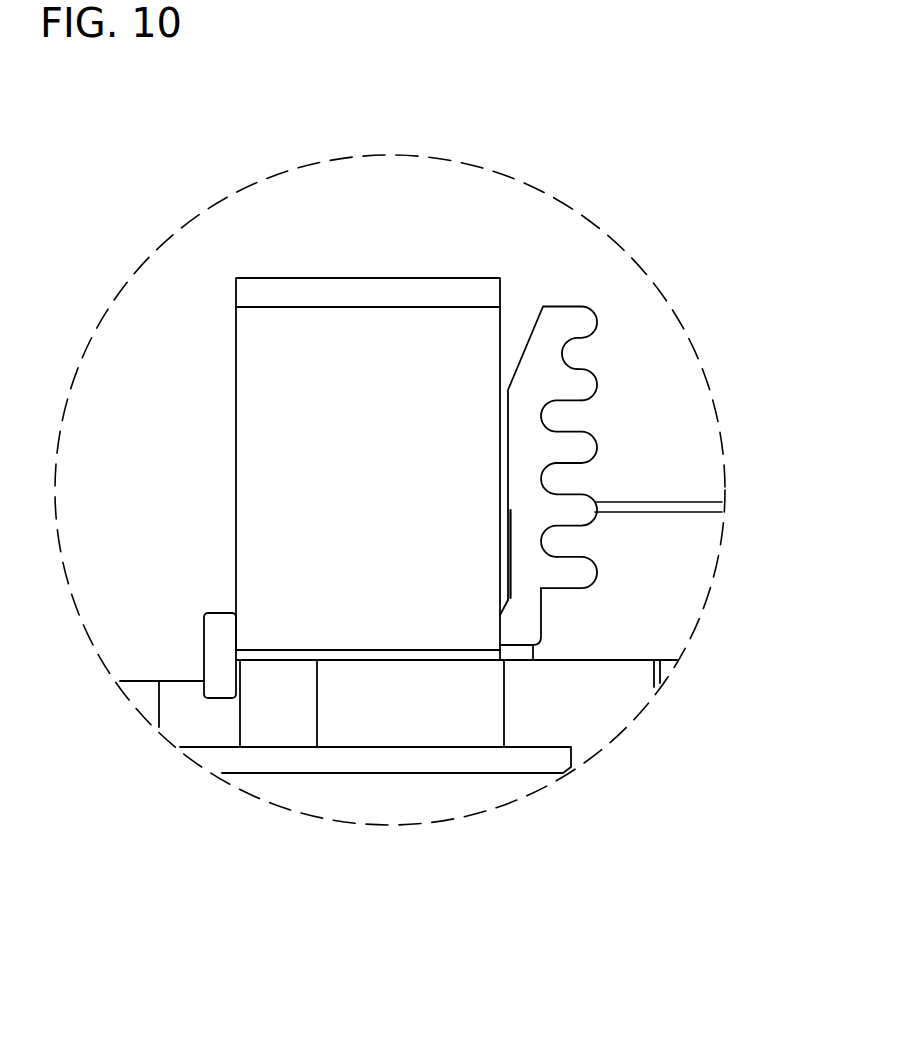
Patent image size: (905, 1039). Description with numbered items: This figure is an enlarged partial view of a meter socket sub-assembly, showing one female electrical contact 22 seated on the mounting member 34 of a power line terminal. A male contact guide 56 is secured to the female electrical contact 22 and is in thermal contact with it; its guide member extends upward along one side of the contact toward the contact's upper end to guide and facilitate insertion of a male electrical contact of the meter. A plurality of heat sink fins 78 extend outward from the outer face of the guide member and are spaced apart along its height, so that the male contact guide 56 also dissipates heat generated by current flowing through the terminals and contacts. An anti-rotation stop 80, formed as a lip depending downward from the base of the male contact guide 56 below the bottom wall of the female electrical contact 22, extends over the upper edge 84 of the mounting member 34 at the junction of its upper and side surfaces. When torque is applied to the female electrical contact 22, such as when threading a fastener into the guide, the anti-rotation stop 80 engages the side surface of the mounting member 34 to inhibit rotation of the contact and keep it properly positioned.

The female electrical contact 22 is at (385, 278).
The mounting member 34 is at (353, 702).
The male contact guide 56 is at (610, 433).
The heat sink fins 78 is at (587, 382).
The anti-rotation stop 80 is at (203, 655).
The upper edge 84 is at (242, 662).